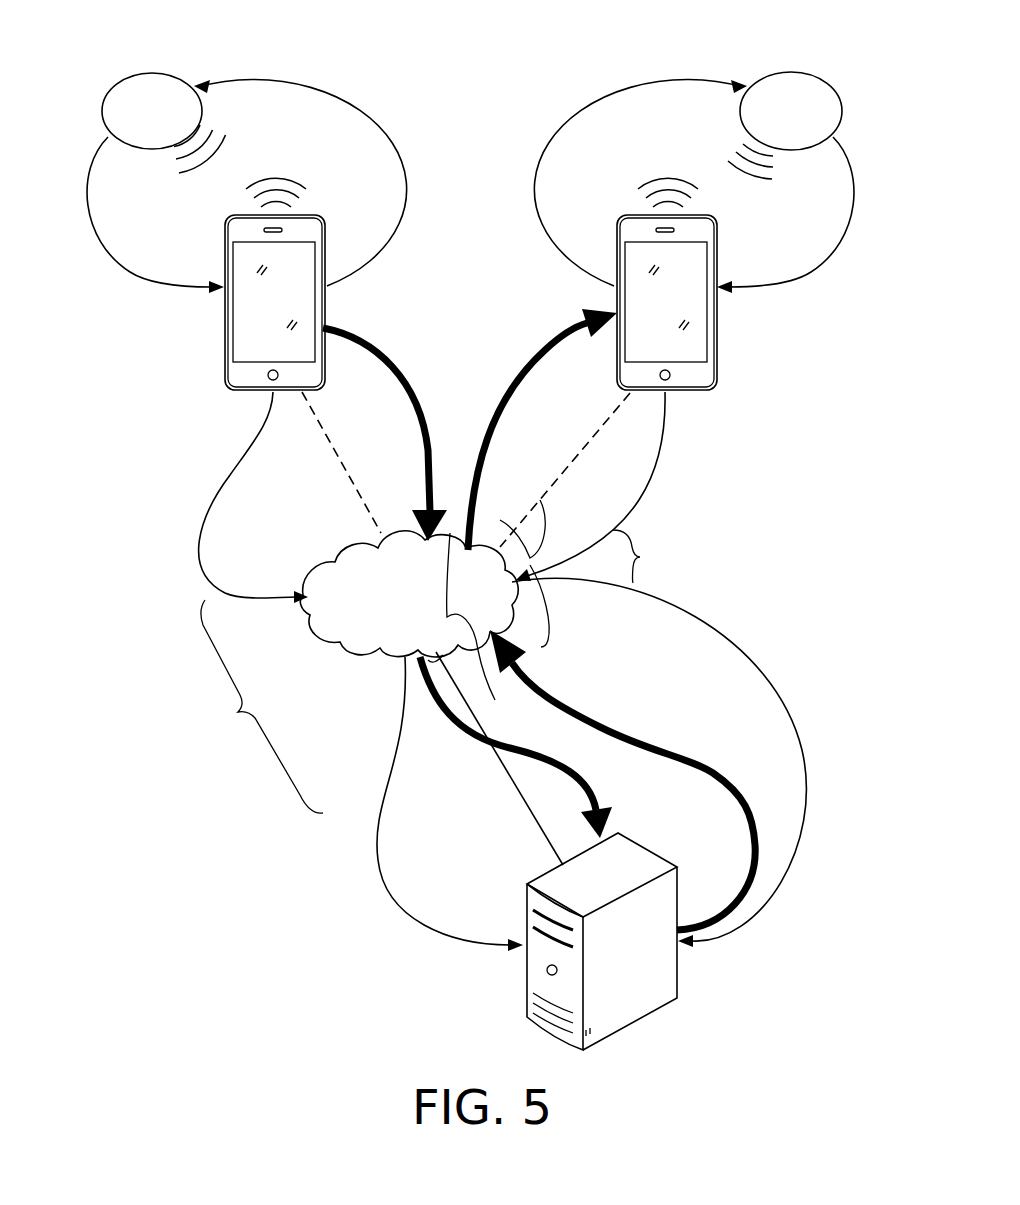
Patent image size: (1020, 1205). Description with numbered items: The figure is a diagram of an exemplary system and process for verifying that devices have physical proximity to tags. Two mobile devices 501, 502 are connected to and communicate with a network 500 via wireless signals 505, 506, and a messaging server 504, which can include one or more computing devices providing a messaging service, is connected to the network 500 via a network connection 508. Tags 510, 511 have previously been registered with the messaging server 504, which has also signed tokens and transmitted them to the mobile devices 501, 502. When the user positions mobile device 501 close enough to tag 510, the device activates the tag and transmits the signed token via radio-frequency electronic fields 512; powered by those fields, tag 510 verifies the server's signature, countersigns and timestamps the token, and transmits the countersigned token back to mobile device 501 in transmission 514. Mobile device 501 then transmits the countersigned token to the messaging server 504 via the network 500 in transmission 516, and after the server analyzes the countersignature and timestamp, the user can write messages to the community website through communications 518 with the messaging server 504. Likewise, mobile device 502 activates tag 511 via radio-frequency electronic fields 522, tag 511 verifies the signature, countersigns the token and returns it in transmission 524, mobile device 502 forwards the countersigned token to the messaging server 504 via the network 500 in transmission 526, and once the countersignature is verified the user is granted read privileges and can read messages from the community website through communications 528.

The network 500 is at (352, 652).
The mobile device 501 is at (223, 345).
The mobile device 502 is at (720, 352).
The messaging server 504 is at (680, 960).
The wireless signal 505 is at (340, 465).
The wireless signal 506 is at (590, 433).
The network connection 508 is at (513, 780).
The tag 510 is at (171, 74).
The tag 511 is at (772, 74).
The radio-frequency electronic fields 512 is at (377, 247).
The transmission of countersigned token 514 is at (120, 253).
The transmission of countersigned token to messaging server 516 is at (240, 715).
The communications for writing messages 518 is at (478, 626).
The radio-frequency electronic fields 522 is at (800, 267).
The transmission of countersigned token 524 is at (558, 248).
The transmission of countersigned token to messaging server 526 is at (645, 553).
The communications for reading messages 528 is at (540, 500).